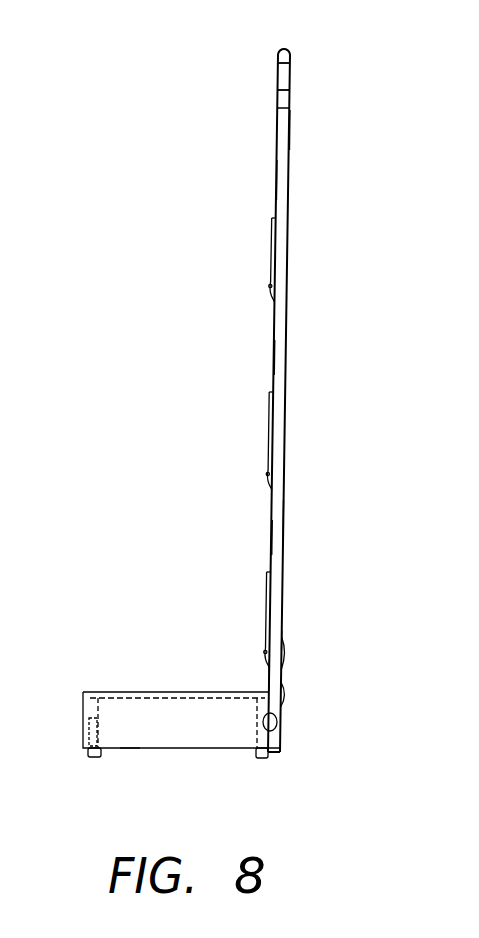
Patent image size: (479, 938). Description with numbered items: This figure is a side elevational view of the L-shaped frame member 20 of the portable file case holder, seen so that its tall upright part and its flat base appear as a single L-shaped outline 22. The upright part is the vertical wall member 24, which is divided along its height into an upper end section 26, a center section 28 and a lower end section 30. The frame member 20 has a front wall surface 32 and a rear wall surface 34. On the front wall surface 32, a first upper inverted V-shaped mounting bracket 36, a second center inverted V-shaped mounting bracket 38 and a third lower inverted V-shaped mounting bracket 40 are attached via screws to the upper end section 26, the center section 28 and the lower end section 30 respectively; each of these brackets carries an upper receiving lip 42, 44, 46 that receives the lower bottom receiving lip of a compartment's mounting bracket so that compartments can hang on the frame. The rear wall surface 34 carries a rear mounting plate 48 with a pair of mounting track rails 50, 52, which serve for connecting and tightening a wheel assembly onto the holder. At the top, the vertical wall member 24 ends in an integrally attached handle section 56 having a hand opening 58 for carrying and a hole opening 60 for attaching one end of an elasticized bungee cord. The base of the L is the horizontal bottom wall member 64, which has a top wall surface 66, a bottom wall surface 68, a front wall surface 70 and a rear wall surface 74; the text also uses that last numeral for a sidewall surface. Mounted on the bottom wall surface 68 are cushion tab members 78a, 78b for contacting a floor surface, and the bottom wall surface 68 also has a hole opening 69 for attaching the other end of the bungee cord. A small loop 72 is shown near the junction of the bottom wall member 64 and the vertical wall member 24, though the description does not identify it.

The frame member 20 is at (252, 144).
The elongate bar 22 is at (289, 383).
The vertical wall member 24 is at (292, 128).
The upper end section 26 is at (277, 178).
The center section 28 is at (275, 356).
The lower end section 30 is at (268, 676).
The front wall surface 32 is at (272, 531).
The rear wall surface 34 is at (284, 514).
The first upper inverted V-shaped mounting bracket 36 is at (233, 260).
The second center inverted V-shaped mounting bracket 38 is at (268, 432).
The third lower inverted V-shaped mounting bracket 40 is at (266, 604).
The upper receiving lip 42 is at (276, 217).
The upper receiving lip 44 is at (272, 392).
The upper receiving lip 46 is at (270, 572).
The rear mounting plate 48 is at (284, 668).
The mounting track rail 50 is at (284, 647).
The mounting track rail 52 is at (285, 703).
The handle section 56 is at (277, 53).
The hand opening 58 is at (293, 73).
The hole opening 60 is at (293, 101).
The horizontal bottom wall member 64 is at (82, 694).
The top wall surface 66 is at (138, 692).
The bottom wall surface 68 is at (128, 748).
The hole opening 69 is at (88, 731).
The front wall surface 70 is at (83, 716).
The pivot loop 72 is at (263, 729).
The rear wall surface 74 is at (197, 711).
The cushion tab member 78a is at (96, 753).
The cushion tab member 78b is at (264, 757).